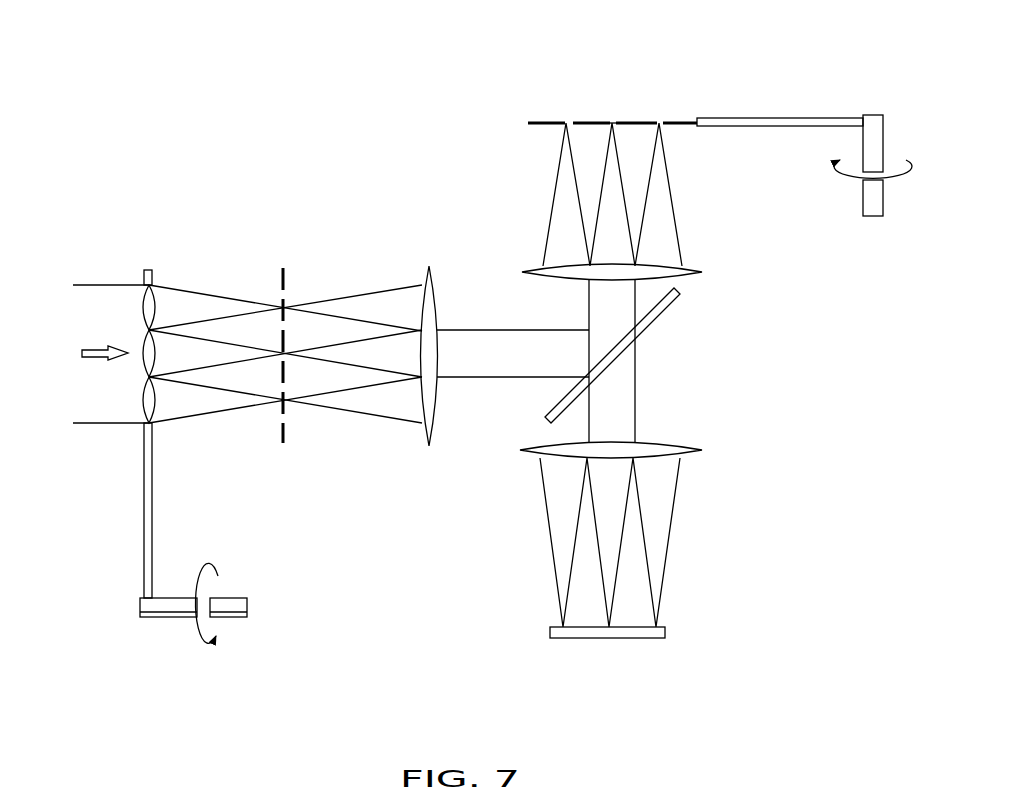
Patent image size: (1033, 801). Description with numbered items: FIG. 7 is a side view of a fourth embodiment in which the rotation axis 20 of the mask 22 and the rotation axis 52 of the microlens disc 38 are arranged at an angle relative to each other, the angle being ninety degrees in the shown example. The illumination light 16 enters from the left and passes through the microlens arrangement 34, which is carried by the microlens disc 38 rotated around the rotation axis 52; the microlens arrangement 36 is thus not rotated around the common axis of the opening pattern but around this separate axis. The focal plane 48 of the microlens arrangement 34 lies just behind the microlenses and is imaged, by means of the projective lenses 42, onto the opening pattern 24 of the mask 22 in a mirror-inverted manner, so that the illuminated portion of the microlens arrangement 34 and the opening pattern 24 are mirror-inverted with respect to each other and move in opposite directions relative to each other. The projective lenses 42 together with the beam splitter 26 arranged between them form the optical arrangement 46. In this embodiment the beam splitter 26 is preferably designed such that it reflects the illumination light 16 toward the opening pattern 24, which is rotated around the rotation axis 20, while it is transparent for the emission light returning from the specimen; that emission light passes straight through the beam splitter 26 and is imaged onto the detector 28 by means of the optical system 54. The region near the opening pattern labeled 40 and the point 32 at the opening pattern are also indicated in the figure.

The illumination light 16 is at (104, 366).
The rotation axis 20 is at (875, 130).
The mask 22 is at (780, 106).
The opening pattern 24 is at (582, 109).
The beam splitter 26 is at (656, 320).
The detector 28 is at (627, 631).
The focal spot 32 is at (612, 118).
The microlens arrangement 34 is at (132, 331).
The microlens arrangement 36 is at (147, 312).
The microlens disc 38 is at (132, 483).
The imaging optics 40 is at (540, 305).
The projective lenses 42 is at (428, 428).
The optical arrangement 46 is at (479, 440).
The focal plane 48 is at (284, 432).
The rotation axis 52 is at (170, 608).
The optical system 54 is at (668, 447).